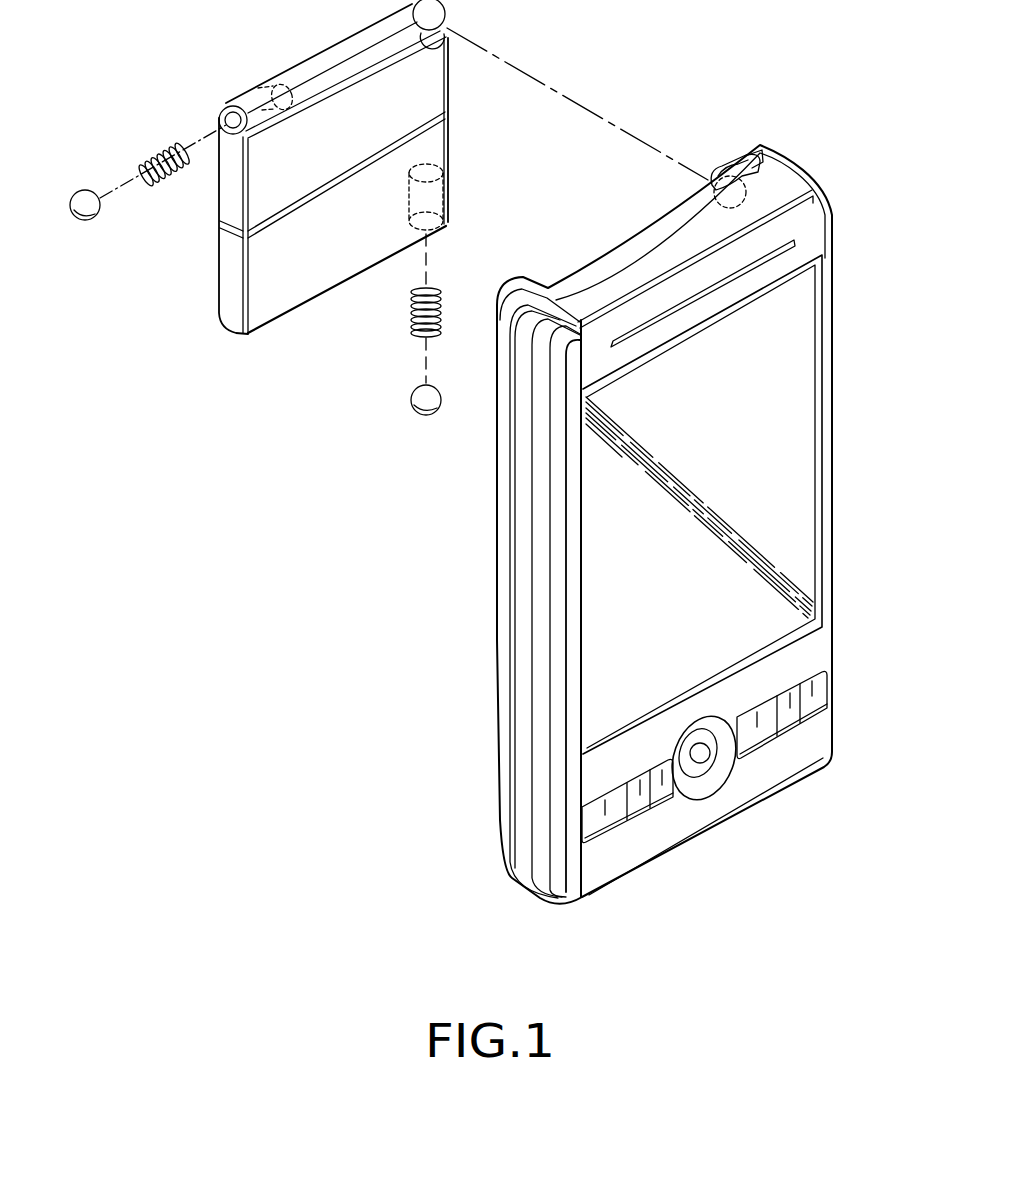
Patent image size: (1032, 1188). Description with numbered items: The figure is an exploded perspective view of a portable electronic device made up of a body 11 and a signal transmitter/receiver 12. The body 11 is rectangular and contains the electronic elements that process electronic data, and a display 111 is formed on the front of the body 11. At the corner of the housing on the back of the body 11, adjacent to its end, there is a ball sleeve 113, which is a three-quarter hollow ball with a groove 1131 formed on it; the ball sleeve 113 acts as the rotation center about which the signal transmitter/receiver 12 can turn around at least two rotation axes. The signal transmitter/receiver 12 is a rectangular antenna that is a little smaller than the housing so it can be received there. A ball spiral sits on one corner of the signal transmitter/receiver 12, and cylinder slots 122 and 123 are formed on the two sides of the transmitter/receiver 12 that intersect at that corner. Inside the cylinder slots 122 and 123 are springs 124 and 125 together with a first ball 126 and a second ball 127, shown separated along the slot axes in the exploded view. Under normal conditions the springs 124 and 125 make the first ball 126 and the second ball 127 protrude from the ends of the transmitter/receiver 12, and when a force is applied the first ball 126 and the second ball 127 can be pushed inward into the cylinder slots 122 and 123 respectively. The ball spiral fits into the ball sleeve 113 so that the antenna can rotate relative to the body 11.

The body 11 is at (470, 596).
The display 111 is at (765, 528).
The ball sleeve 113 is at (722, 170).
The groove 1131 is at (708, 185).
The signal transmitter/receiver 12 is at (262, 242).
The cylinder slot 122 is at (263, 90).
The cylinder slot 123 is at (428, 195).
The spring 124 is at (160, 143).
The spring 125 is at (412, 316).
The first ball 126 is at (80, 199).
The second ball 127 is at (413, 404).